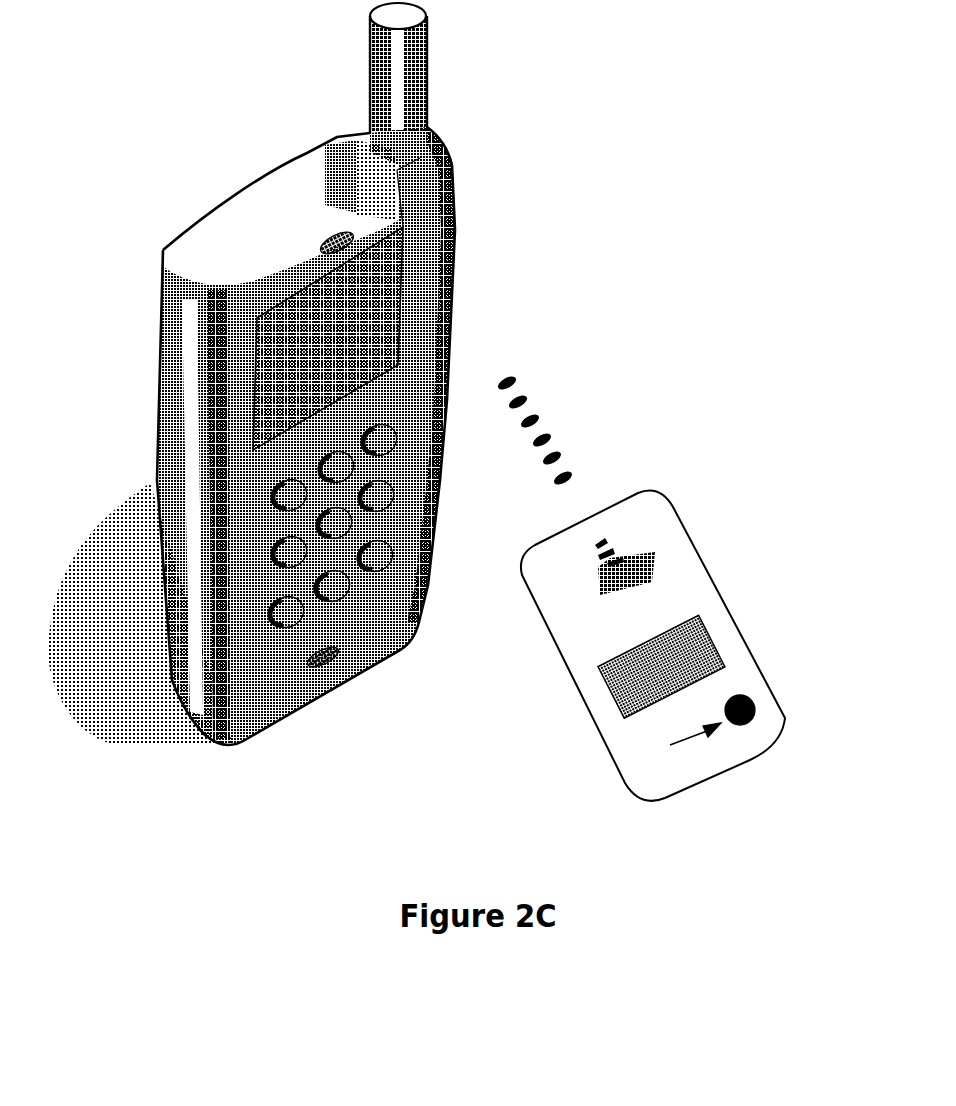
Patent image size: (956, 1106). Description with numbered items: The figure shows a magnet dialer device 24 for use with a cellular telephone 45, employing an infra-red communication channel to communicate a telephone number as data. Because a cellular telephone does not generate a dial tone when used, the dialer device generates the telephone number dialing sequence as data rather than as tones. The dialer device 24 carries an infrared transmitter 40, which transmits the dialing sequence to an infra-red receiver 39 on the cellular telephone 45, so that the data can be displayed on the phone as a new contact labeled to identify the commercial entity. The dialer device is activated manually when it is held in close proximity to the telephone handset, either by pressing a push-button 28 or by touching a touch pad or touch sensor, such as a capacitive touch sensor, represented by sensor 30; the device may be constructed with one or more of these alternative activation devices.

The cellular telephone 45 is at (328, 374).
The infra-red receiver 39 is at (336, 158).
The magnet dialer device 24 is at (687, 632).
The infrared transmitter 40 is at (625, 572).
The push-button 28 is at (789, 694).
The sensor 30 is at (757, 712).